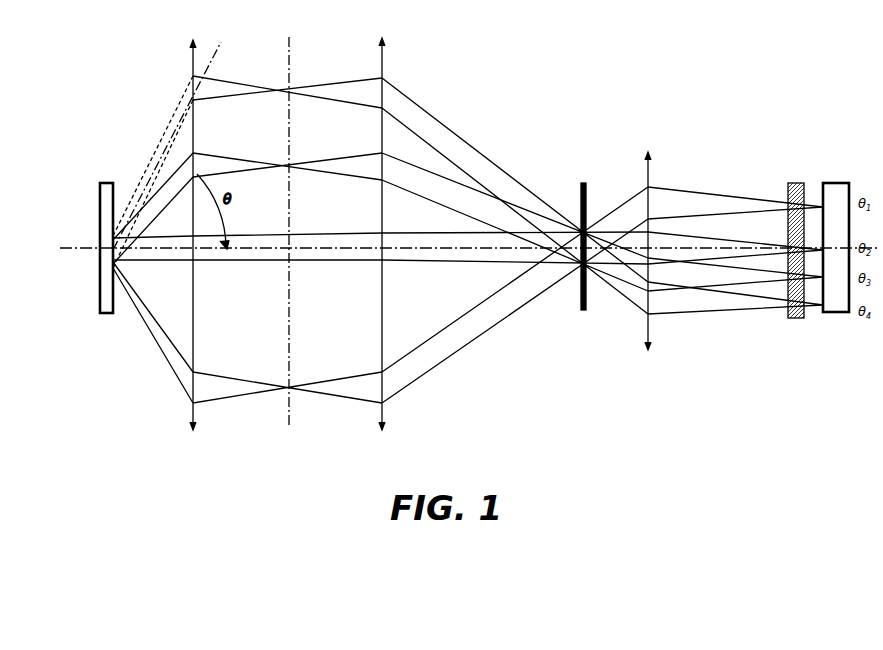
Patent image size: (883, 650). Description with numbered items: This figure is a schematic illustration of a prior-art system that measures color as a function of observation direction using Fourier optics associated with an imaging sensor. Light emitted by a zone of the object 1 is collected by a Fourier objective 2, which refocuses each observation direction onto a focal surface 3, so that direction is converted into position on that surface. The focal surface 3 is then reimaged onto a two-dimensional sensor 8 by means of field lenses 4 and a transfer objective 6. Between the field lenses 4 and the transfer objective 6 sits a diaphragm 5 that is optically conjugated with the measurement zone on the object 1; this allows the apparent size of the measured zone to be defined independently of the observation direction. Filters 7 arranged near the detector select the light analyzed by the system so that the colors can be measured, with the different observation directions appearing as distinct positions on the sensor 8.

The object 1 is at (104, 181).
The Fourier objective 2 is at (191, 70).
The focal surface 3 is at (302, 87).
The field lenses 4 is at (388, 72).
The diaphragm 5 is at (579, 196).
The transfer objective 6 is at (652, 165).
The filters 7 is at (787, 178).
The two-dimensional sensor 8 is at (831, 181).